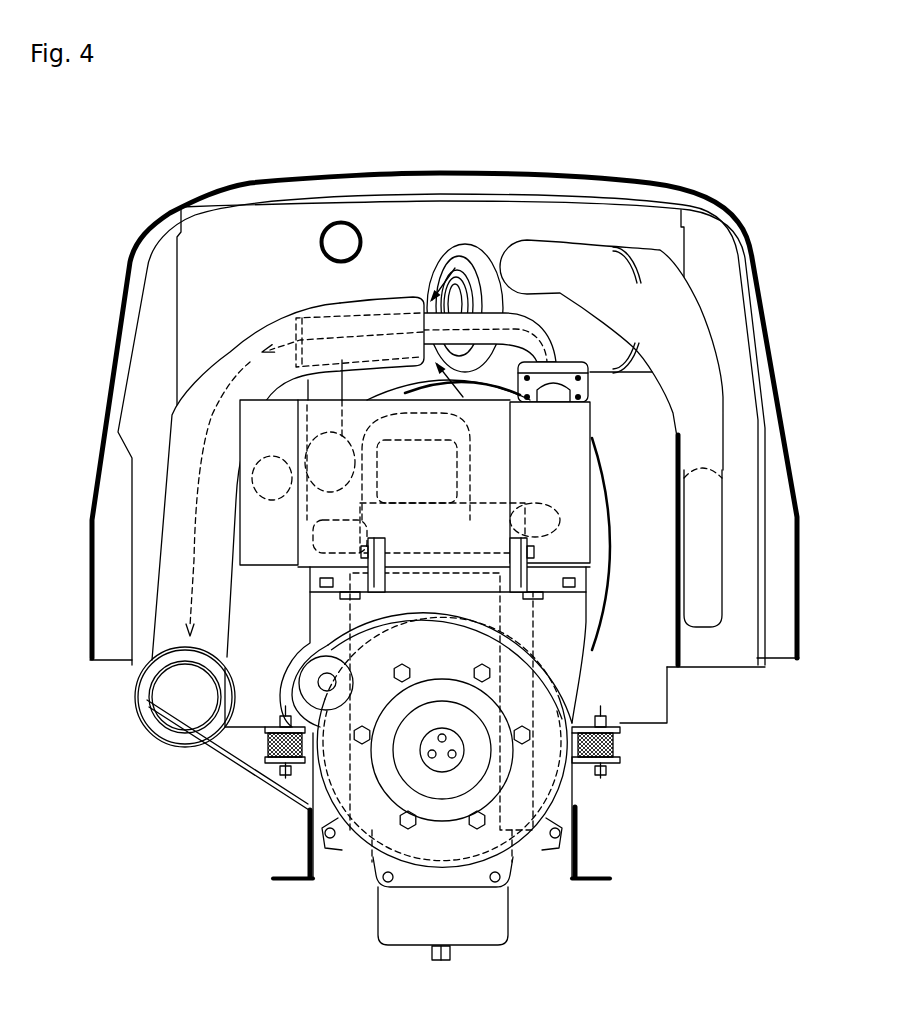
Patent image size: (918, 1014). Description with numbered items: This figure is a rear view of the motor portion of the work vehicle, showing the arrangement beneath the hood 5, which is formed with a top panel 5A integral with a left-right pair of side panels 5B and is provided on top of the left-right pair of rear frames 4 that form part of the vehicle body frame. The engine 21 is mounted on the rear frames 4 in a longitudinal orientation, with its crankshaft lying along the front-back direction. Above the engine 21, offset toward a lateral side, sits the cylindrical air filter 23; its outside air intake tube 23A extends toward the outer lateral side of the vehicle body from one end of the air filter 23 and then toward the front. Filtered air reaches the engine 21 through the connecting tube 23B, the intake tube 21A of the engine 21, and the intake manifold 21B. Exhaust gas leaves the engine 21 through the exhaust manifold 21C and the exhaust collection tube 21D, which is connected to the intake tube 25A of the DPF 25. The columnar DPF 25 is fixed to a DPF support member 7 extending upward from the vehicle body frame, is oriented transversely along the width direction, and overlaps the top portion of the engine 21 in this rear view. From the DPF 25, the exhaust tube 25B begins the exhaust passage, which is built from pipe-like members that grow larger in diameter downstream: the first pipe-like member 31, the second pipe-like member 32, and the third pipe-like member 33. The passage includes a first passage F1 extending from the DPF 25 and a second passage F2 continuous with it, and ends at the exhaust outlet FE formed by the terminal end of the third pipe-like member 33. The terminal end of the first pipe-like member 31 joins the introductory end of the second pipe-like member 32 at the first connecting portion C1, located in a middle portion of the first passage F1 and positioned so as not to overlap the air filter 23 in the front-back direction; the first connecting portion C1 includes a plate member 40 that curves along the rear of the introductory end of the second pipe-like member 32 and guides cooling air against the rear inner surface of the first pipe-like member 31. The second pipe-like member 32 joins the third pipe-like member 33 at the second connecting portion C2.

The rear frames 4 is at (293, 883).
The hood 5 is at (423, 170).
The top panel 5A is at (348, 172).
The side panels 5B is at (116, 326).
The DPF support member 7 is at (368, 567).
The engine 21 is at (523, 683).
The intake tube 21A is at (423, 417).
The intake manifold 21B is at (538, 512).
The exhaust manifold 21C is at (419, 528).
The exhaust collection tube 21D is at (283, 462).
The air filter 23 is at (491, 249).
The outside air intake tube 23A is at (690, 357).
The connecting tube 23B is at (406, 292).
The DPF 25 is at (597, 433).
The intake tube of the DPF 25A is at (270, 500).
The exhaust tube of the DPF 25B is at (547, 402).
The first pipe-like member 31 is at (518, 326).
The second pipe-like member 32 is at (243, 347).
The third pipe-like member 33 is at (148, 732).
The plate member 40 is at (320, 308).
The first connecting portion C1 is at (313, 296).
The second connecting portion C2 is at (127, 704).
The first passage F1 is at (345, 365).
The second passage F2 is at (243, 505).
The exhaust outlet FE is at (185, 712).